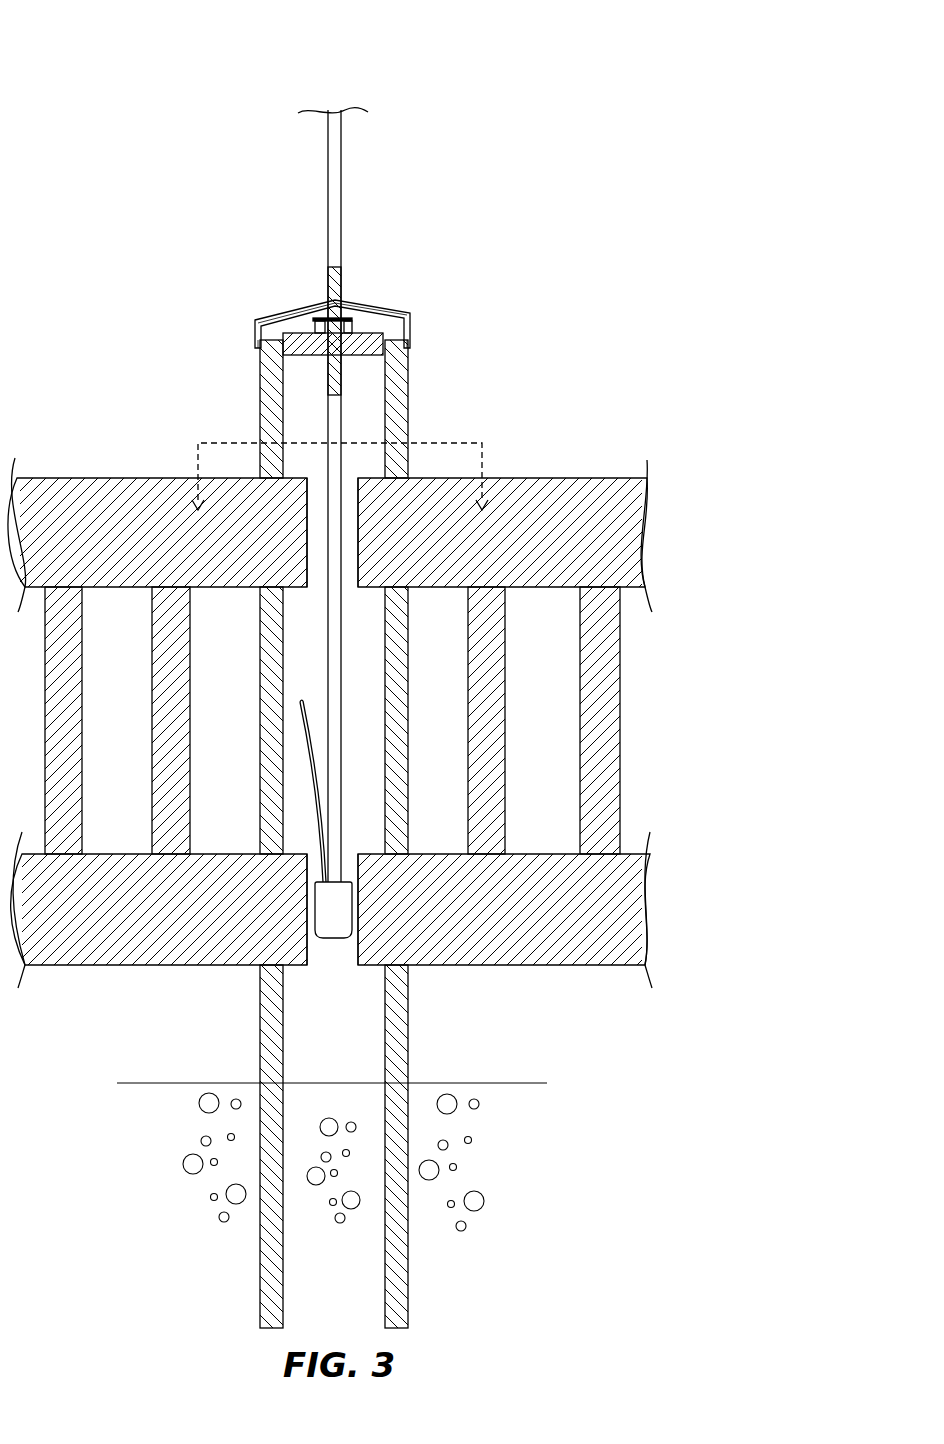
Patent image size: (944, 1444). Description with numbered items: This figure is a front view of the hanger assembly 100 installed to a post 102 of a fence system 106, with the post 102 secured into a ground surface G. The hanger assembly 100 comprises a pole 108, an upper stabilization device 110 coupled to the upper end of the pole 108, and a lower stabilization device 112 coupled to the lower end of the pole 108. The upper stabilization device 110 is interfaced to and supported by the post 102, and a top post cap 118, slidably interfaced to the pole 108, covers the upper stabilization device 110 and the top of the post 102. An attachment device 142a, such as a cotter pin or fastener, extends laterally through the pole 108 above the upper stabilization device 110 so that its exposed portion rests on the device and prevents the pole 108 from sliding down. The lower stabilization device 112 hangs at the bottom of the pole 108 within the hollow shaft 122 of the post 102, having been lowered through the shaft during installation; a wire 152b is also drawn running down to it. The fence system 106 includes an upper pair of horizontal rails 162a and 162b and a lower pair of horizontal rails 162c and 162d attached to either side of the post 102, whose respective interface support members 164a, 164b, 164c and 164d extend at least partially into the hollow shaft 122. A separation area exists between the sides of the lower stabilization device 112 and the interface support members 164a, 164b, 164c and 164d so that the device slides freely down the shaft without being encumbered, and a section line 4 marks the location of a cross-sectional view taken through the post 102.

The hanger assembly 100 is at (452, 262).
The post 102 is at (398, 385).
The fence system 106 is at (133, 68).
The pole 108 is at (330, 188).
The upper stabilization device 110 is at (287, 337).
The lower stabilization device 112 is at (320, 958).
The top post cap 118 is at (313, 313).
The hollow shaft 122 is at (360, 740).
The attachment device 142a is at (323, 322).
The sensor wire 152b is at (345, 910).
The upper horizontal rail 162a is at (120, 500).
The upper horizontal rail 162b is at (608, 500).
The lower horizontal rail 162c is at (100, 945).
The lower horizontal rail 162d is at (545, 940).
The interface support member 164a is at (300, 540).
The interface support member 164b is at (365, 540).
The interface support member 164c is at (293, 905).
The interface support member 164d is at (378, 905).
The section line 4- 4 is at (340, 476).
The ground surface G is at (150, 1085).